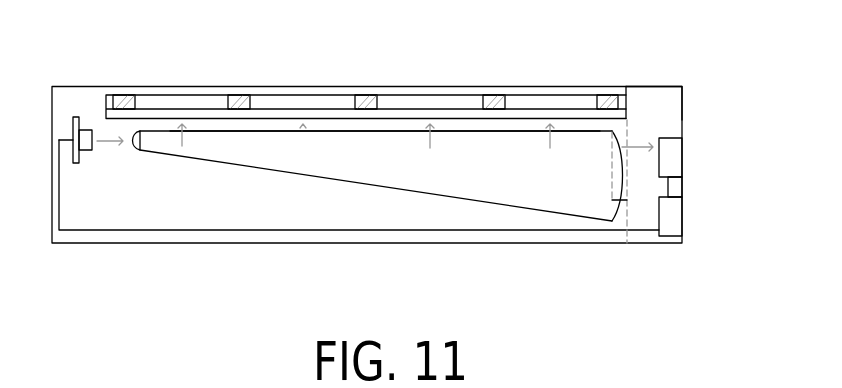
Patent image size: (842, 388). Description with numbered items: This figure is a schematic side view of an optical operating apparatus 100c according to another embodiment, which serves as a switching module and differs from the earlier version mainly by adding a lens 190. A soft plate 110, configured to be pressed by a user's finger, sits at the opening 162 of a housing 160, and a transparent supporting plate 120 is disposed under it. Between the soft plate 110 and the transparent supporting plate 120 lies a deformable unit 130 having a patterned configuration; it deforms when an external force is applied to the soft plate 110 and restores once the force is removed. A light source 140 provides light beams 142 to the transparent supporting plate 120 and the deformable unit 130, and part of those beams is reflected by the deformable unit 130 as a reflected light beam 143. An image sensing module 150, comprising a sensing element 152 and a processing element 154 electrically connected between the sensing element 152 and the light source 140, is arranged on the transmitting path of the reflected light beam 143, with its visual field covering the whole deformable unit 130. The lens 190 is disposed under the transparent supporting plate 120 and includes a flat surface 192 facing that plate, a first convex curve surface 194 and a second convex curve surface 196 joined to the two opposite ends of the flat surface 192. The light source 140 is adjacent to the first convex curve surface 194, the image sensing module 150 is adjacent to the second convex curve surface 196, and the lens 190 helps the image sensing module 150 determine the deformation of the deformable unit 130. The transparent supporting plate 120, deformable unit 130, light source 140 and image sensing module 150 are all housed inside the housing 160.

The optical operating apparatus 100c is at (733, 312).
The soft plate 110 is at (293, 90).
The transparent supporting plate 120 is at (622, 117).
The deformable unit 130 is at (611, 104).
The light source 140 is at (78, 118).
The light beams 142 is at (98, 143).
The reflected light beam 143 is at (639, 146).
The image sensing module 150 is at (725, 187).
The sensing element 152 is at (680, 157).
The processing element 154 is at (680, 220).
The housing 160 is at (437, 244).
The opening 162 is at (625, 84).
The lens 190 is at (570, 207).
The flat surface 192 is at (165, 130).
The first convex curve surface 194 is at (134, 133).
The second convex curve surface 196 is at (619, 201).